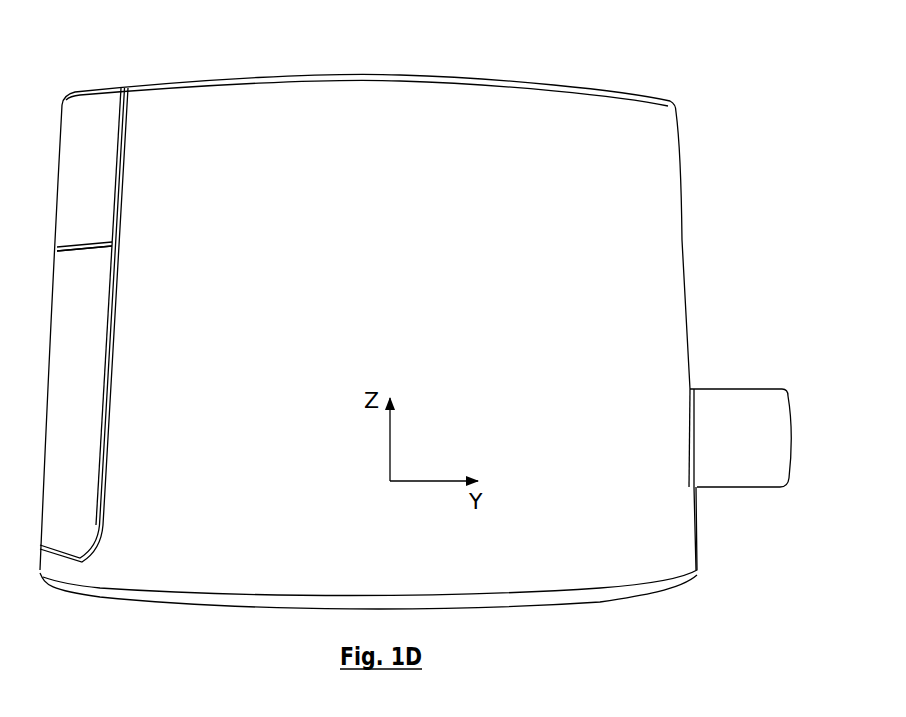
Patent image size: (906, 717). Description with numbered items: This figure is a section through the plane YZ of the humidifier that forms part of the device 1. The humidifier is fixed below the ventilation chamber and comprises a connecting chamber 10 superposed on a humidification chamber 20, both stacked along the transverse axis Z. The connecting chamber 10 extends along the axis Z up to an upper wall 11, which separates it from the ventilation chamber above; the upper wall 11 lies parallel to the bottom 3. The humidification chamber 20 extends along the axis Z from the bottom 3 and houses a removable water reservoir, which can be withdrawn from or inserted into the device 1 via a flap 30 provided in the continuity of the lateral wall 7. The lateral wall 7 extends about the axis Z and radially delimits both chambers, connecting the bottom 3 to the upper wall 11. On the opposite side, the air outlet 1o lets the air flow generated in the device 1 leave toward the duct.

The device 1 is at (722, 70).
The upper wall 11 is at (486, 62).
The lateral wall 7 is at (688, 296).
The air outlet 1o is at (745, 463).
The bottom 3 is at (541, 610).
The connecting chamber 10 is at (130, 161).
The humidification chamber 20 is at (130, 361).
The flap 30 is at (71, 303).